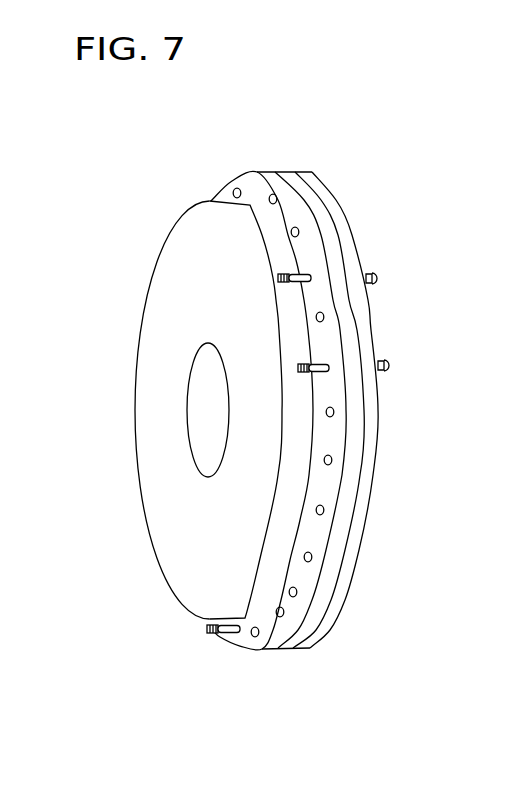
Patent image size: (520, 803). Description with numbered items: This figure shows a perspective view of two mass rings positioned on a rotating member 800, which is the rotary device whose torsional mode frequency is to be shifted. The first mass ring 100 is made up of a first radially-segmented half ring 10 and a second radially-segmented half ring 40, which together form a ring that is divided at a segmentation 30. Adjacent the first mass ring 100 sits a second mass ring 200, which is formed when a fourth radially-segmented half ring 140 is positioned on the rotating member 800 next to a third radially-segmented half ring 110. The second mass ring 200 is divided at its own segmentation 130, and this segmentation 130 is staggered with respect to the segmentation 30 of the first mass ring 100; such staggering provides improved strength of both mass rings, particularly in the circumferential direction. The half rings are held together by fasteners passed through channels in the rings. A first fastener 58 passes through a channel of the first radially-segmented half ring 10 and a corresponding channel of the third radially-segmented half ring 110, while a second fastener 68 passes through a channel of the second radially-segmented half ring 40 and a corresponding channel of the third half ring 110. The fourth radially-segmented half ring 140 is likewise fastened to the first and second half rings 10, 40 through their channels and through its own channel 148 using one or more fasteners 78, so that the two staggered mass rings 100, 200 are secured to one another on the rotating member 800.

The mass ring 100 is at (312, 417).
The third radially-segmented half ring 110 is at (248, 186).
The first radially-segmented half ring 10 is at (330, 193).
The segmentation 130 is at (303, 303).
The segmentation 30 is at (367, 392).
The second radially-segmented half ring 40 is at (372, 487).
The fourth radially-segmented half ring 140 is at (253, 650).
The first fastener 58 is at (311, 274).
The second fastener 68 is at (210, 633).
The fasteners 78 is at (329, 368).
The channel 148 is at (323, 513).
The second mass ring 200 is at (159, 382).
The rotating member 800 is at (167, 412).